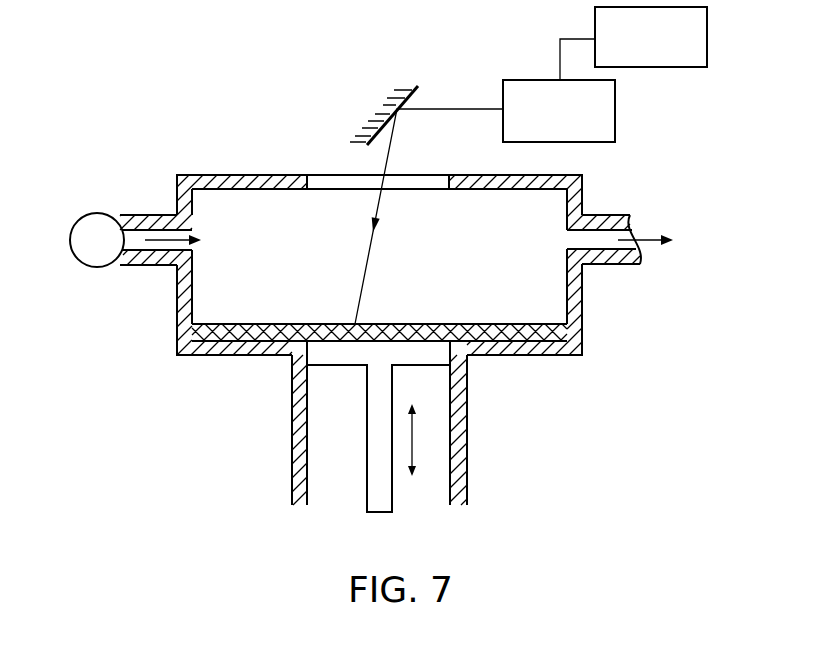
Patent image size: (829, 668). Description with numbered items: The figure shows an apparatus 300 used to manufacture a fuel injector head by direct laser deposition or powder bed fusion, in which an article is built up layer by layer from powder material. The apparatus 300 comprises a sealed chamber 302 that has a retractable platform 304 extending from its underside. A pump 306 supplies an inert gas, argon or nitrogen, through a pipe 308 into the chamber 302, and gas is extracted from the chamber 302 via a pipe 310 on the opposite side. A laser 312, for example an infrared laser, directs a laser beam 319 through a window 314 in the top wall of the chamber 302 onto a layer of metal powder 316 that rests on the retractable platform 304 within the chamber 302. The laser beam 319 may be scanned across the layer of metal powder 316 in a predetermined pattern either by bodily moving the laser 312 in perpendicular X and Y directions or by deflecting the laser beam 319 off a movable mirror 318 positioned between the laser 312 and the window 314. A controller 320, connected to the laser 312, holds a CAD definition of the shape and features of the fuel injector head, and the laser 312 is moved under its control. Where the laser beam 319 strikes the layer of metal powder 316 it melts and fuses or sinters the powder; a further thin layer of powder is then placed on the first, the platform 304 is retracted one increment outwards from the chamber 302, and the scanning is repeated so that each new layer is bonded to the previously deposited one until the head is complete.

The apparatus 300 is at (507, 397).
The sealed chamber 302 is at (580, 187).
The retractable platform 304 is at (337, 362).
The pump 306 is at (102, 234).
The pipe 308 is at (142, 258).
The pipe 310 is at (612, 264).
The laser 312 is at (586, 125).
The window 314 is at (325, 175).
The layer of metal powder 316 is at (248, 341).
The movable mirror 318 is at (388, 100).
The laser beam 319 is at (448, 108).
The controller 320 is at (678, 51).